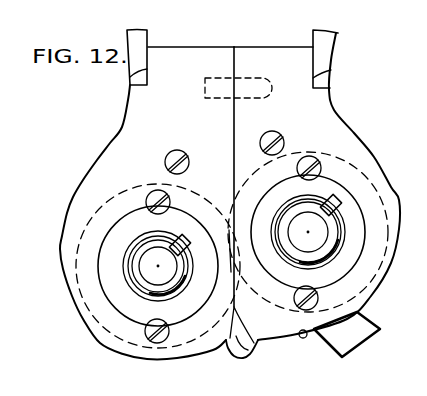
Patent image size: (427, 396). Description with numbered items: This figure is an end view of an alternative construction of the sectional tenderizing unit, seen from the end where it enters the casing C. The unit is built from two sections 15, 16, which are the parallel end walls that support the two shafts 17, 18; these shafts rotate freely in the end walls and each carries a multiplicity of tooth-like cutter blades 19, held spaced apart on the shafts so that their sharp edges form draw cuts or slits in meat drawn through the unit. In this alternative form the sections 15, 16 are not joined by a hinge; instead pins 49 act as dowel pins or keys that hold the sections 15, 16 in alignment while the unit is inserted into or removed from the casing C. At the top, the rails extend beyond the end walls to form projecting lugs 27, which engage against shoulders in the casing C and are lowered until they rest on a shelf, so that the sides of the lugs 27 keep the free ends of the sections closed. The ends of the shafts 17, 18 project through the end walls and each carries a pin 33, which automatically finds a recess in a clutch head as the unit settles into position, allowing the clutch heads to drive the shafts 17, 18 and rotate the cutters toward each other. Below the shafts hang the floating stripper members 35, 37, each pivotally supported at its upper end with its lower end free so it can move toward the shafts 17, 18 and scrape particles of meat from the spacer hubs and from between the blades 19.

The casing C is at (123, 125).
The projecting lugs 27 is at (128, 32).
The end wall 16 is at (197, 57).
The end wall 15 is at (277, 53).
The pins 49 is at (258, 97).
The cutter blades 19 is at (78, 197).
The shaft 18 is at (152, 271).
The shaft 17 is at (313, 238).
The pin 33 is at (182, 240).
The stripper member 37 is at (245, 345).
The stripper member 35 is at (340, 340).